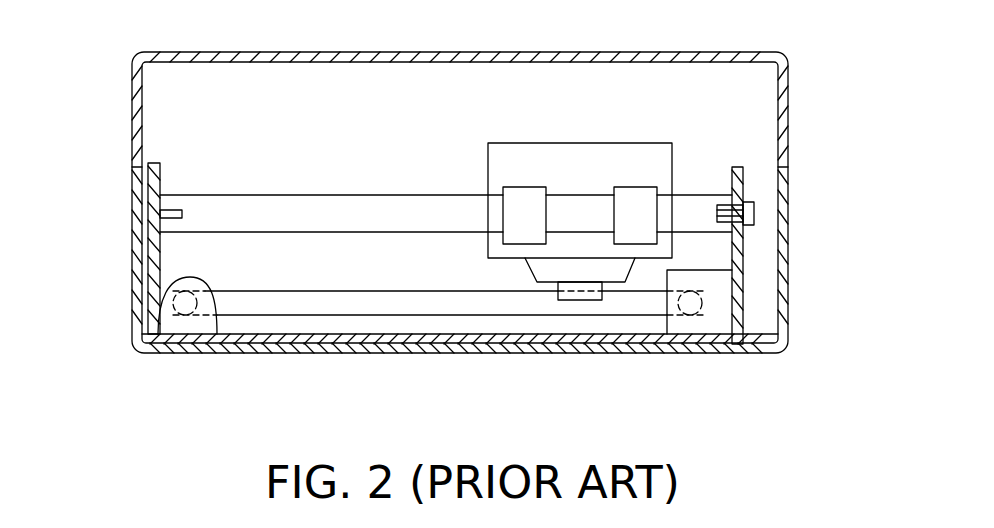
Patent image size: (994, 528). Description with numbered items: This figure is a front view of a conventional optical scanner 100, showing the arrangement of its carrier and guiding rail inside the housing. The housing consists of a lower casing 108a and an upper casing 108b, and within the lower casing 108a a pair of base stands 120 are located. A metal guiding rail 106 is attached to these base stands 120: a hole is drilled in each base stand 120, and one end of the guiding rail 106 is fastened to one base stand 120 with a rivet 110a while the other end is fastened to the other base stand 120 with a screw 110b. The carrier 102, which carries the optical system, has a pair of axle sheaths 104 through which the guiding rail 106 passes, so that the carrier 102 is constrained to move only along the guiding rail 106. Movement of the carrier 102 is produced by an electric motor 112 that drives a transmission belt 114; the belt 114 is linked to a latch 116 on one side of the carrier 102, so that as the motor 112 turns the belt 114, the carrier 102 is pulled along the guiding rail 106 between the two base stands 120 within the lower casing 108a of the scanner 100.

The scanner 100 is at (857, 88).
The carrier 102 is at (568, 162).
The axle sheaths 104 is at (523, 198).
The guiding rail 106 is at (333, 207).
The lower casing 108a is at (784, 237).
The upper casing 108b is at (784, 105).
The rivet 110a is at (150, 212).
The screw 110b is at (752, 209).
The electric motor 112 is at (720, 315).
The transmission belt 114 is at (610, 317).
The latch 116 is at (573, 299).
The base stand 120 is at (737, 256).